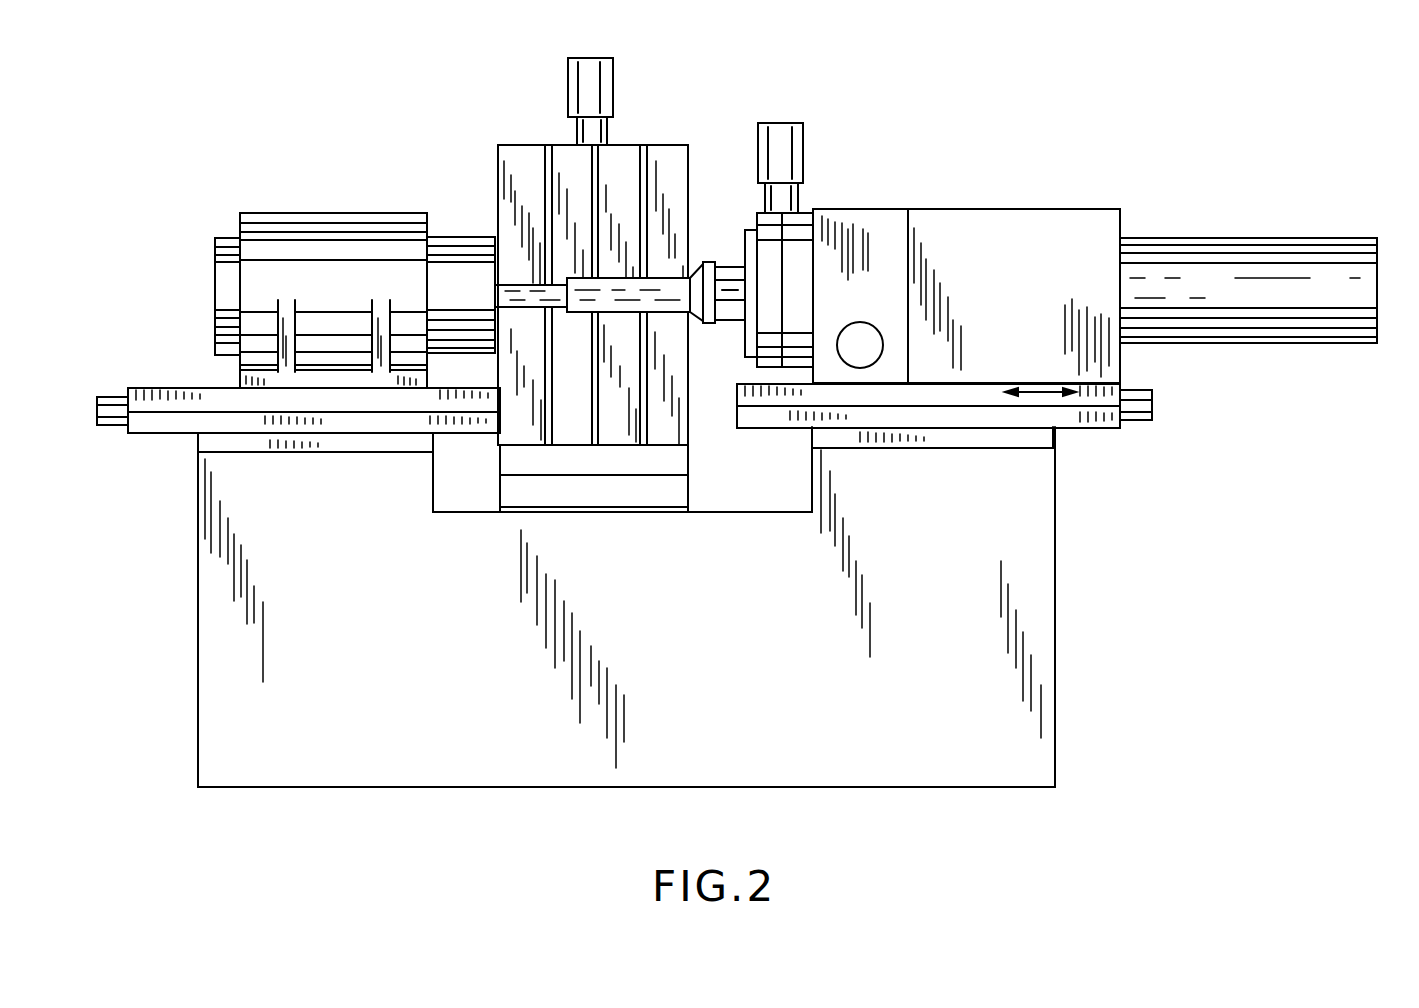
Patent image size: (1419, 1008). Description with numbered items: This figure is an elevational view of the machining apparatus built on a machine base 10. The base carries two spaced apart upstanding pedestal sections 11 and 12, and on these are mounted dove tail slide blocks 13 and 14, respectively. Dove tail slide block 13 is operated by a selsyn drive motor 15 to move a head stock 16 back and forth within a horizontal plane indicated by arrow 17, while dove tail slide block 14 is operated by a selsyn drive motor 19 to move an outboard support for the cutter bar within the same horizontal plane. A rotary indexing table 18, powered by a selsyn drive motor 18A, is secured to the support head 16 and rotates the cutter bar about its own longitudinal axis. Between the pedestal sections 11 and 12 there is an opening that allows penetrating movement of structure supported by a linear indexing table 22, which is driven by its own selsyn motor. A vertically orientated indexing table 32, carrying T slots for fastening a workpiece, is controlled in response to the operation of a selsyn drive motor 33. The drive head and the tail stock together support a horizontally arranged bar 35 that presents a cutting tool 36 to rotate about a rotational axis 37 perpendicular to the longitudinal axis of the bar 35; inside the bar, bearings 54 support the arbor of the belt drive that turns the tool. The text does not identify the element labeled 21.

The machine base 10 is at (1057, 700).
The pedestal section 11 is at (957, 489).
The pedestal section 12 is at (327, 496).
The dove tail slide block 13 is at (1078, 425).
The dove tail slide block 14 is at (197, 395).
The selsyn drive motor 15 is at (1153, 404).
The head stock 16 is at (1020, 311).
The arrow 17 is at (1045, 398).
The rotary indexing table 18 is at (799, 196).
The selsyn drive motor 18A is at (805, 140).
The selsyn drive motor 19 is at (97, 402).
The motor 21 is at (326, 213).
The linear indexing table 22 is at (689, 456).
The vertically orientated indexing table 32 is at (667, 147).
The selsyn drive motor 33 is at (613, 72).
The bar 35 is at (668, 316).
The cutting tool 36 is at (588, 290).
The rotational axis 37 is at (587, 330).
The bearings 54 is at (612, 278).